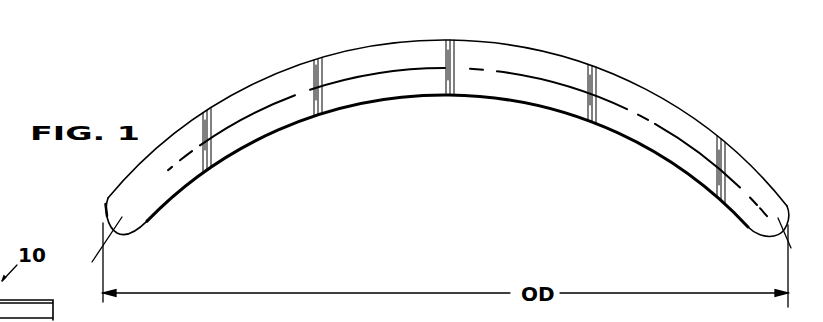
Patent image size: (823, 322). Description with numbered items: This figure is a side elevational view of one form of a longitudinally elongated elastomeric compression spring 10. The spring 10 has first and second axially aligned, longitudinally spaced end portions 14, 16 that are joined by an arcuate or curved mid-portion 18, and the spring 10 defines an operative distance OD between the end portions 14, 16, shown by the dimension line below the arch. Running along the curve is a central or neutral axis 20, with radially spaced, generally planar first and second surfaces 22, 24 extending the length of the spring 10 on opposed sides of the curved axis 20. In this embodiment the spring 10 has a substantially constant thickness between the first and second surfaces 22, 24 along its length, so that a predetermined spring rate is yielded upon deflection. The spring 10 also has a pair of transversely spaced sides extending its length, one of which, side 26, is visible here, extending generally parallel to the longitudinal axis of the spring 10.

The elastomeric compression spring 10 is at (200, 100).
The first end portion 14 is at (147, 208).
The second end portion 16 is at (757, 217).
The arcuate mid-portion 18 is at (462, 80).
The central or neutral axis 20 is at (308, 90).
The first surface 22 is at (535, 50).
The second surface 24 is at (523, 97).
The side 26 is at (657, 149).